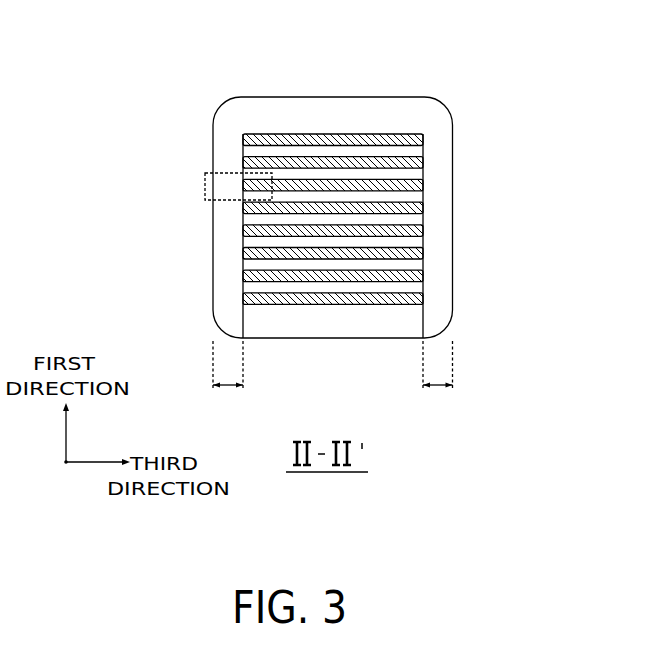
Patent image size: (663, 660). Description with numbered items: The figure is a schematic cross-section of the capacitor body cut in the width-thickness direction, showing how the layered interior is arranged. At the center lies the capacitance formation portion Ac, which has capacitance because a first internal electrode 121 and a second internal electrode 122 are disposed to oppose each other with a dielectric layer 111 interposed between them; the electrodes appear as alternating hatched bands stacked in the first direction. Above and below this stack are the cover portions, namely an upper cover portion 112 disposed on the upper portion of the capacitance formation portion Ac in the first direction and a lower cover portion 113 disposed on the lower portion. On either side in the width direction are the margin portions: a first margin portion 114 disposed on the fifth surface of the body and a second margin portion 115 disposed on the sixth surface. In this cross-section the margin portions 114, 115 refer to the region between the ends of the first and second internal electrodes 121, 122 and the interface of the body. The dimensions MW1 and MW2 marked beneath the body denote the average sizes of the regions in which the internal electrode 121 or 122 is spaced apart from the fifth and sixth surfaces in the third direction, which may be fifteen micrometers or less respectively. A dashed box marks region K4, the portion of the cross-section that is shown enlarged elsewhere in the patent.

The upper cover portion 112 is at (333, 97).
The lower cover portion 113 is at (329, 338).
The first margin portion 114 is at (214, 246).
The second margin portion 115 is at (452, 248).
The dielectric layer 111 is at (423, 150).
The first internal electrode 121 is at (423, 137).
The second internal electrode 122 is at (423, 163).
The capacitance formation portion Ac is at (329, 206).
The region K4 is at (205, 186).
The average size MW1 is at (228, 378).
The average size MW2 is at (438, 378).